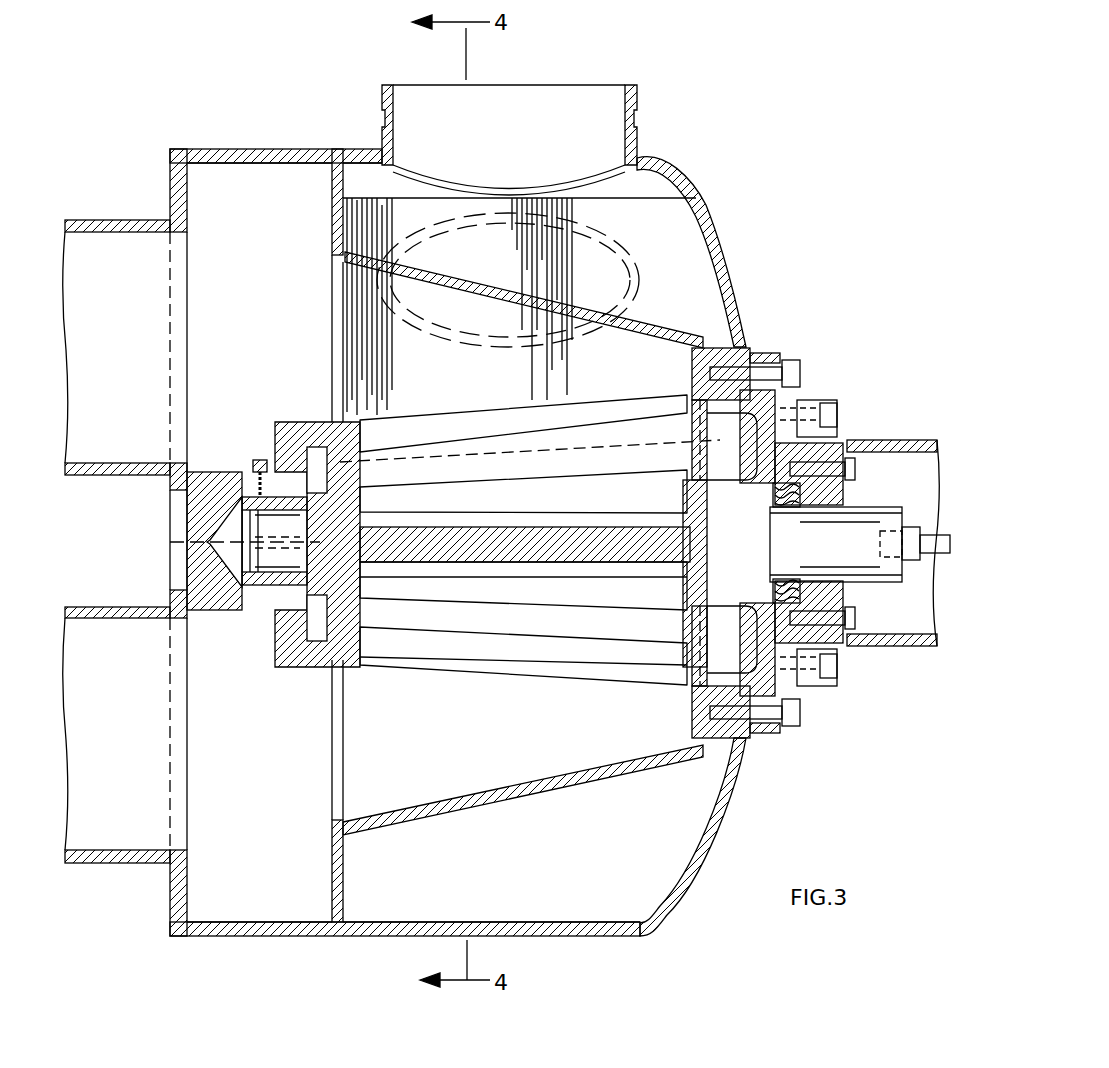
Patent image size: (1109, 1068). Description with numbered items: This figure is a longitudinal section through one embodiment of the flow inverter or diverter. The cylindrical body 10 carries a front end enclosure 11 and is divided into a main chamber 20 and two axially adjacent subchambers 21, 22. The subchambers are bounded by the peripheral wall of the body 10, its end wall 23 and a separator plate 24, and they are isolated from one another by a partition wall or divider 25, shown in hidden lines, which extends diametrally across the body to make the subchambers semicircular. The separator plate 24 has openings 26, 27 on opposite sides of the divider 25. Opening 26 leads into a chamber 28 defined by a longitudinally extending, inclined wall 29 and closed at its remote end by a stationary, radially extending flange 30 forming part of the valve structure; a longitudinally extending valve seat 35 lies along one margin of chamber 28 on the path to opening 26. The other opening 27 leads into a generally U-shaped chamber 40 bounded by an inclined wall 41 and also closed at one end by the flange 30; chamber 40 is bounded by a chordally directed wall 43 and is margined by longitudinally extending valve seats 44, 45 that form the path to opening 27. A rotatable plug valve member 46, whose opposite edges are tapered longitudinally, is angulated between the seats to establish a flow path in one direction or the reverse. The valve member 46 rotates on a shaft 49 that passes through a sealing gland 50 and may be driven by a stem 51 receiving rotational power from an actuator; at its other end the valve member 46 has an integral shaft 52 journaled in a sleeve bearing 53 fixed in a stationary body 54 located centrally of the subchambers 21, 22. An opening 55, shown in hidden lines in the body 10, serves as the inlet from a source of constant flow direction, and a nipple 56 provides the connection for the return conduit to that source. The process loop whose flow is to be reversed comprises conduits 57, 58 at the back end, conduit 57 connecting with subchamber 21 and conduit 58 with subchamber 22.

The body 10 is at (700, 182).
The front end enclosure 11 is at (735, 292).
The main chamber 20 is at (700, 272).
The subchamber 21 is at (232, 172).
The subchamber 22 is at (250, 905).
The end wall 23 is at (175, 895).
The separator plate 24 is at (345, 872).
The partition wall or divider 25 is at (230, 472).
The opening 26 is at (340, 805).
The opening 27 is at (340, 372).
The chamber 28 is at (575, 734).
The inclined wall 29 is at (505, 797).
The flange 30 is at (750, 738).
The valve seat 35 is at (623, 637).
The chamber 40 is at (372, 252).
The inclined wall 41 is at (648, 335).
The wall 43 is at (372, 197).
The valve seat 44 is at (578, 512).
The valve seat 45 is at (535, 472).
The plug valve member 46 is at (500, 540).
The shaft 49 is at (845, 552).
The sealing gland 50 is at (840, 680).
The stem 51 is at (928, 560).
The integral shaft 52 is at (290, 565).
The sleeve bearing 53 is at (255, 588).
The stationary body 54 is at (214, 600).
The opening 55 is at (607, 232).
The nipple 56 is at (628, 85).
The conduit 57 is at (112, 220).
The conduit 58 is at (112, 607).